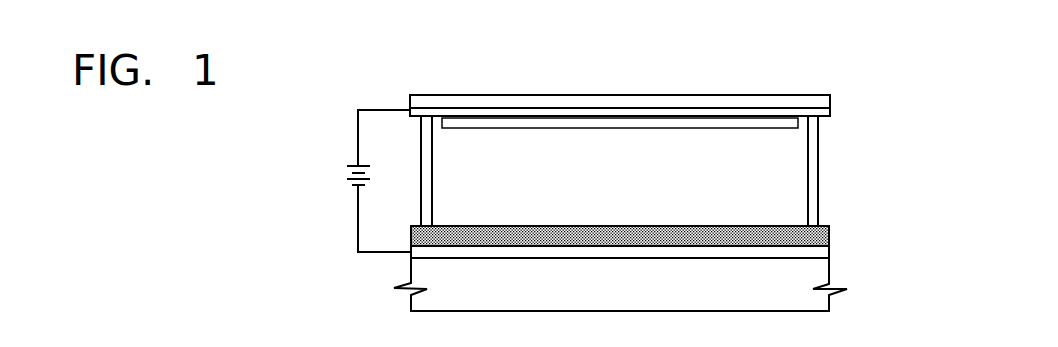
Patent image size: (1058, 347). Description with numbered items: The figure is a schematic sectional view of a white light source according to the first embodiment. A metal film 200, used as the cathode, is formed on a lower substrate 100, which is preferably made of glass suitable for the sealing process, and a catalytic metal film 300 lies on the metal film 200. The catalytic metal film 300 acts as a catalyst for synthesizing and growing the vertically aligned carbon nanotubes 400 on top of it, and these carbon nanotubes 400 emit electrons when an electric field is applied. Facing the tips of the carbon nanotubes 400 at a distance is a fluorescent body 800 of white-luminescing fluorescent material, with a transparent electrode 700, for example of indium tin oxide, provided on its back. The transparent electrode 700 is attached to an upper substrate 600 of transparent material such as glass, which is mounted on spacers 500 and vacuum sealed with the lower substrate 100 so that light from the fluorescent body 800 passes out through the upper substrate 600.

The lower substrate 100 is at (820, 275).
The metal film 200 is at (829, 250).
The catalytic metal film 300 is at (829, 236).
The carbon nanotubes 400 is at (800, 213).
The spacers 500 is at (819, 180).
The upper substrate 600 is at (830, 98).
The transparent electrode 700 is at (830, 112).
The fluorescent body 800 is at (816, 124).